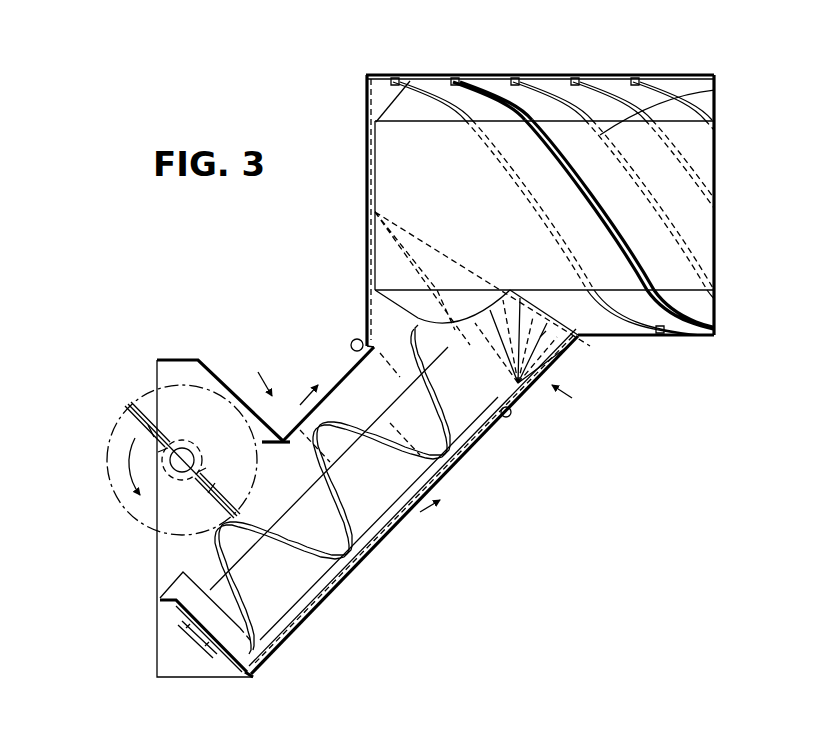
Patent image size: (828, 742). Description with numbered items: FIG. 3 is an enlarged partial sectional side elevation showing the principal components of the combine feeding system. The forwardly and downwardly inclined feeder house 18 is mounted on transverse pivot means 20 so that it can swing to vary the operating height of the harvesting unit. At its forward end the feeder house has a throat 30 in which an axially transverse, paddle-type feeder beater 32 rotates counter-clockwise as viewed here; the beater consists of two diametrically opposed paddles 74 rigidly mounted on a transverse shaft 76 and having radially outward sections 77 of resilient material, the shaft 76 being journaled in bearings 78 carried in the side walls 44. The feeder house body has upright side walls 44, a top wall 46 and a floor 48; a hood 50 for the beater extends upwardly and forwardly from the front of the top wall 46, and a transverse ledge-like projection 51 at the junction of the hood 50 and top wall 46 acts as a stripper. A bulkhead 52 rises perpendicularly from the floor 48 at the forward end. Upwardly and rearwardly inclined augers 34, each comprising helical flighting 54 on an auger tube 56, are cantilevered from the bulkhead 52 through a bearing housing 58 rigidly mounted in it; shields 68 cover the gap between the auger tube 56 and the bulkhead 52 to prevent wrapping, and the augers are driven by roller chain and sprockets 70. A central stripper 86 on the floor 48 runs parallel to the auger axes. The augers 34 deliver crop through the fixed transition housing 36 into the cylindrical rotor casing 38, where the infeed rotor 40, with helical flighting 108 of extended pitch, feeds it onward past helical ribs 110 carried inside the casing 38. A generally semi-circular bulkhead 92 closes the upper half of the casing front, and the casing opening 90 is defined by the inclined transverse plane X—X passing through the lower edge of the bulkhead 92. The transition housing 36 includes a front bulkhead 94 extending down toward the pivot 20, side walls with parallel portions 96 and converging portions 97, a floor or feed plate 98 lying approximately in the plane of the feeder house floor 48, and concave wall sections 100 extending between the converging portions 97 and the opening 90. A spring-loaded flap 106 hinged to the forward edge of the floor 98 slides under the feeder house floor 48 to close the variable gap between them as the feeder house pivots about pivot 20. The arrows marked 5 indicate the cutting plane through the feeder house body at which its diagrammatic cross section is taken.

The feeder house 18 is at (258, 372).
The transverse pivot means 20 is at (354, 339).
The throat 30 is at (165, 552).
The feeder beater 32 is at (105, 435).
The augers 34 is at (354, 489).
The transition housing 36 is at (576, 401).
The rotor casing 38 is at (607, 78).
The infeed rotor 40 is at (375, 121).
The upright side walls 44 is at (375, 404).
The top wall 46 is at (355, 382).
The floor 48 is at (306, 610).
The hood 50 is at (240, 372).
The ledge-like projection 51 is at (273, 454).
The bulkhead 52 is at (246, 676).
The helical flighting 54 is at (325, 463).
The auger tube 56 is at (305, 500).
The bearing housing 58 is at (160, 612).
The shields 68 is at (195, 586).
The roller chain and sprockets 70 is at (183, 633).
The paddles 74 is at (162, 428).
The transverse shaft 76 is at (182, 473).
The radially outward sections 77 is at (135, 410).
The bearings 78 is at (190, 440).
The central stripper 86 is at (340, 578).
The opening 90 is at (533, 312).
The semi-circular bulkhead 92 is at (367, 153).
The front rectangular bulkhead 94 is at (372, 276).
The parallel wall portions 96 is at (383, 318).
The converging wall portions 97 is at (512, 412).
The floor or feed plate 98 is at (570, 345).
The concave wall sections 100 is at (511, 302).
The spring-loaded flap 106 is at (490, 425).
The helical flighting 108 is at (400, 110).
The helical ribs 110 is at (402, 80).
The line X— X is at (365, 208).
The section arrow 5 is at (437, 498).